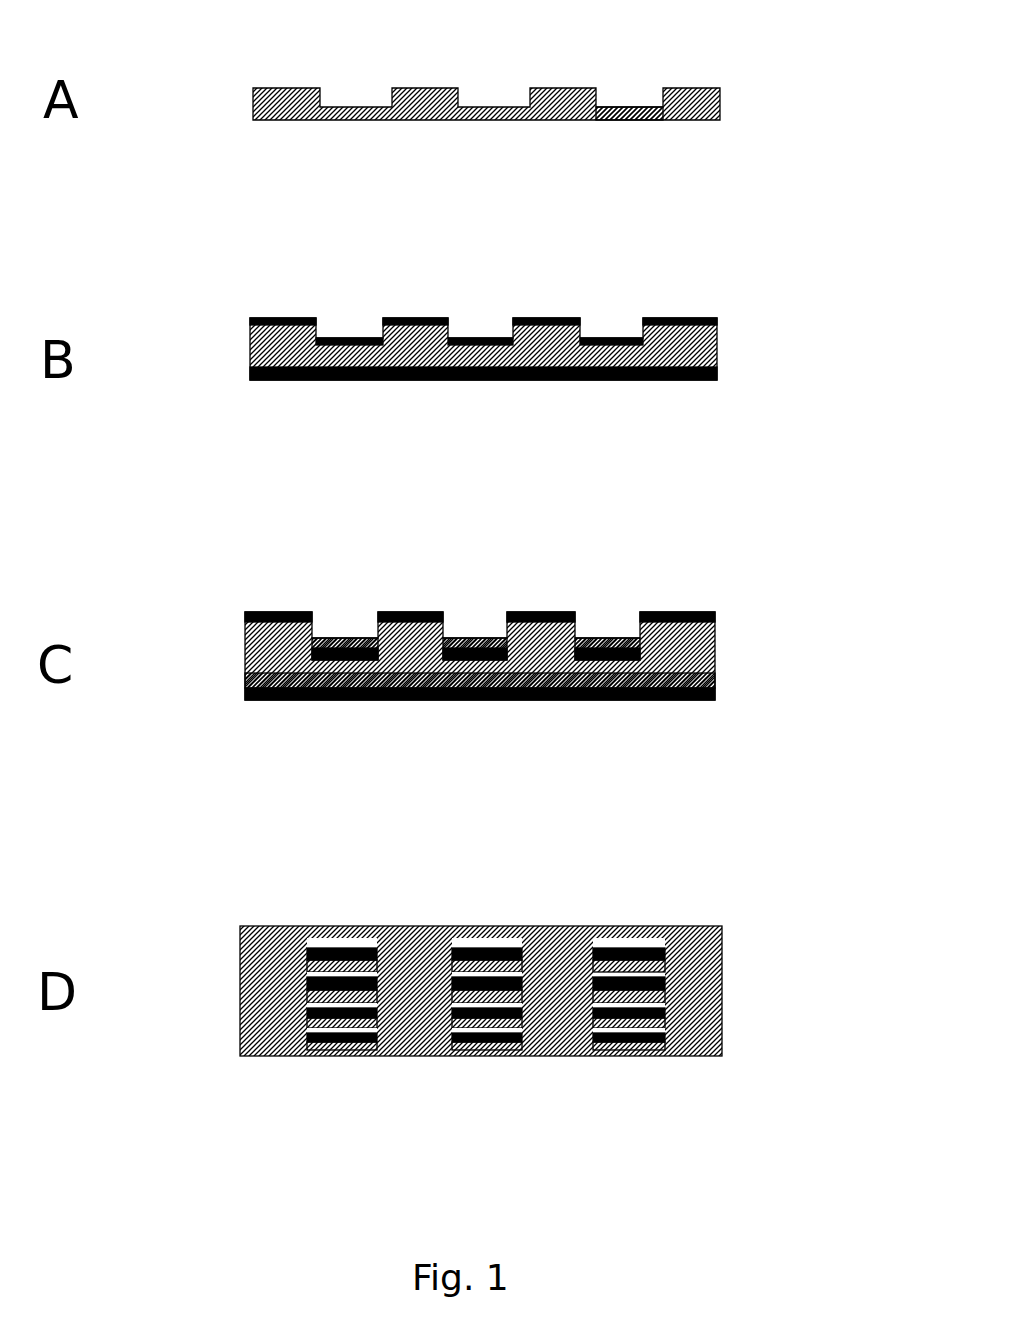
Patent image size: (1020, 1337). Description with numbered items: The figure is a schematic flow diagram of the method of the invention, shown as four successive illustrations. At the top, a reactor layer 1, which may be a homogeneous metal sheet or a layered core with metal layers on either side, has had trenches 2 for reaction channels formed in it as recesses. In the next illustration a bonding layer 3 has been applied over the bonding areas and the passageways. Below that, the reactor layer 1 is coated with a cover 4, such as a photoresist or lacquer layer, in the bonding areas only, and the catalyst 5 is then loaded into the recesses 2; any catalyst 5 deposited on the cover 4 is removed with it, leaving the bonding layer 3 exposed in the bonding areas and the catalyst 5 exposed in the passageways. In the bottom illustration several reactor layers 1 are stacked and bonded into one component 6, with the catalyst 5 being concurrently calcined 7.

The reactor layer 1 is at (760, 104).
The trenches 2 is at (627, 70).
The bonding layer 3 is at (689, 298).
The cover 4 is at (278, 592).
The catalyst 5 is at (605, 613).
The component 6 is at (752, 987).
The calcining 7 is at (640, 944).